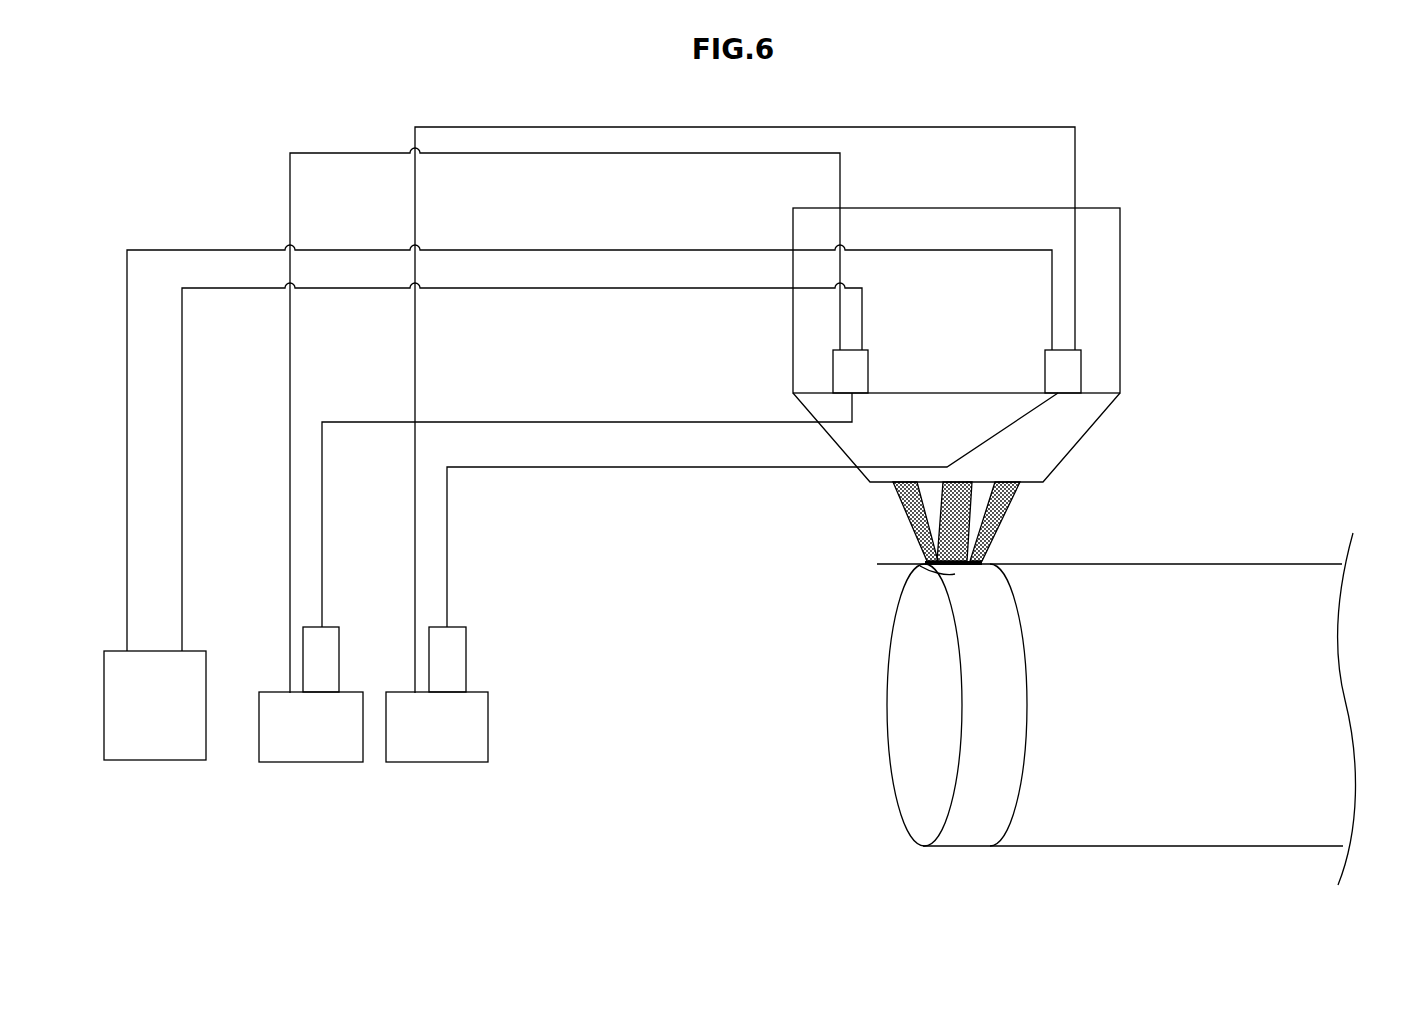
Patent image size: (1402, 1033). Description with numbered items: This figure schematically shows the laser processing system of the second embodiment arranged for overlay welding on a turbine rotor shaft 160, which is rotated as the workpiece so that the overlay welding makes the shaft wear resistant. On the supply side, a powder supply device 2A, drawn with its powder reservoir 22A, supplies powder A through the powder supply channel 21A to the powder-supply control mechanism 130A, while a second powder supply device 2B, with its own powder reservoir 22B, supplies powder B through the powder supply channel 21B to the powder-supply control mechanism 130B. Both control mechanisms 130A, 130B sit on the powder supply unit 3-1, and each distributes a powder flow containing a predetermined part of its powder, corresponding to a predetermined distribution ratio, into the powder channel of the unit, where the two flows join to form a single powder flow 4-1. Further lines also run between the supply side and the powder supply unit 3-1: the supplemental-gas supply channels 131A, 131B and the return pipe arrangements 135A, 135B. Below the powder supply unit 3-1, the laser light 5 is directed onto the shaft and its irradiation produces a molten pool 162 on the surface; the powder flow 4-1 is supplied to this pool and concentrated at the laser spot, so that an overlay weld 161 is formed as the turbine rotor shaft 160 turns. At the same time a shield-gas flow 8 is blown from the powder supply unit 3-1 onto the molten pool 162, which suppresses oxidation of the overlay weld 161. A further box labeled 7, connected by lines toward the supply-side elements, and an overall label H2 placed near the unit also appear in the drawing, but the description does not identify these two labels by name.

The powder supply channel 21A is at (1075, 148).
The powder supply channel 21B is at (838, 170).
The supplemental-gas supply channel 131A is at (998, 250).
The supplemental-gas supply channel 131B is at (862, 305).
The return pipe arrangement 135A is at (668, 468).
The return pipe arrangement 135B is at (545, 420).
The head unit H2 is at (1195, 190).
The powder-supply control mechanism 130A is at (1081, 362).
The powder-supply control mechanism 130B is at (833, 372).
The powder supply unit 3-1 is at (1085, 418).
The powder flow 4-1 is at (912, 498).
The laser light 5 is at (965, 505).
The shield-gas flow 8 is at (917, 553).
The turbine rotor shaft 160 is at (1170, 564).
The overlay weld 161 is at (973, 822).
The molten pool 162 is at (950, 577).
The controller 7 is at (197, 650).
The powder supply device 2A is at (488, 725).
The powder supply device 2B is at (335, 762).
The powder reservoir 22A is at (466, 658).
The powder reservoir 22B is at (340, 647).